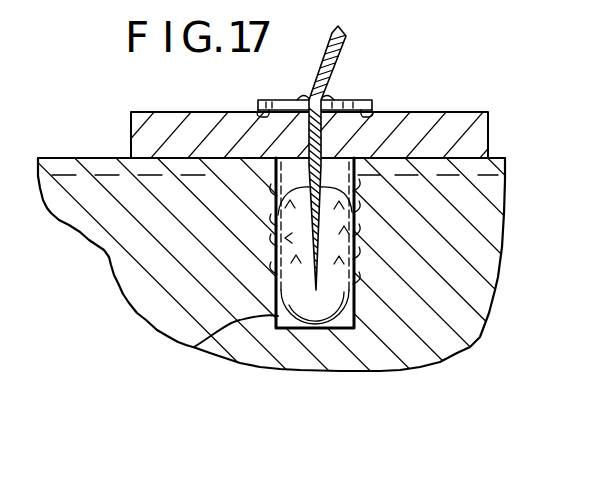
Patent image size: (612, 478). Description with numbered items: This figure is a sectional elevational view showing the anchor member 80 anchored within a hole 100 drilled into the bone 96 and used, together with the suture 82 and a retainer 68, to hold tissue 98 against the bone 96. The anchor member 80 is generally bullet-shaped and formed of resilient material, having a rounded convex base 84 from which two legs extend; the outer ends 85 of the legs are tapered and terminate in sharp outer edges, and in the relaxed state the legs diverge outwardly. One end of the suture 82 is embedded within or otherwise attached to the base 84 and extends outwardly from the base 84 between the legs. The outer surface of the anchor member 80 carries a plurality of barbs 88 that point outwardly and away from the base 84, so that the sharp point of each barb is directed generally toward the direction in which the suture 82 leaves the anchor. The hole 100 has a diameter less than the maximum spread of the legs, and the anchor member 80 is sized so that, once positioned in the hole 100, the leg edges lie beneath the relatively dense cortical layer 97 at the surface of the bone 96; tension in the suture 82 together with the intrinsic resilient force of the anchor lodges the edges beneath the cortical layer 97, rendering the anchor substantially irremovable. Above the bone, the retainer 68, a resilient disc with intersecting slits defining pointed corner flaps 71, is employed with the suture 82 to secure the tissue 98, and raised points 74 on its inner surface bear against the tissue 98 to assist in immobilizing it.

The retainer 68 is at (369, 100).
The pointed corner flaps 71 is at (300, 97).
The raised points 74 is at (257, 111).
The anchor member 80 is at (357, 246).
The suture 82 is at (323, 60).
The rounded convex base 84 is at (352, 314).
The outer ends of the legs 85 is at (276, 184).
The barbs 88 is at (275, 233).
The bone 96 is at (108, 157).
The cortical layer 97 is at (61, 168).
The tissue 98 is at (462, 111).
The hole 100 is at (196, 347).